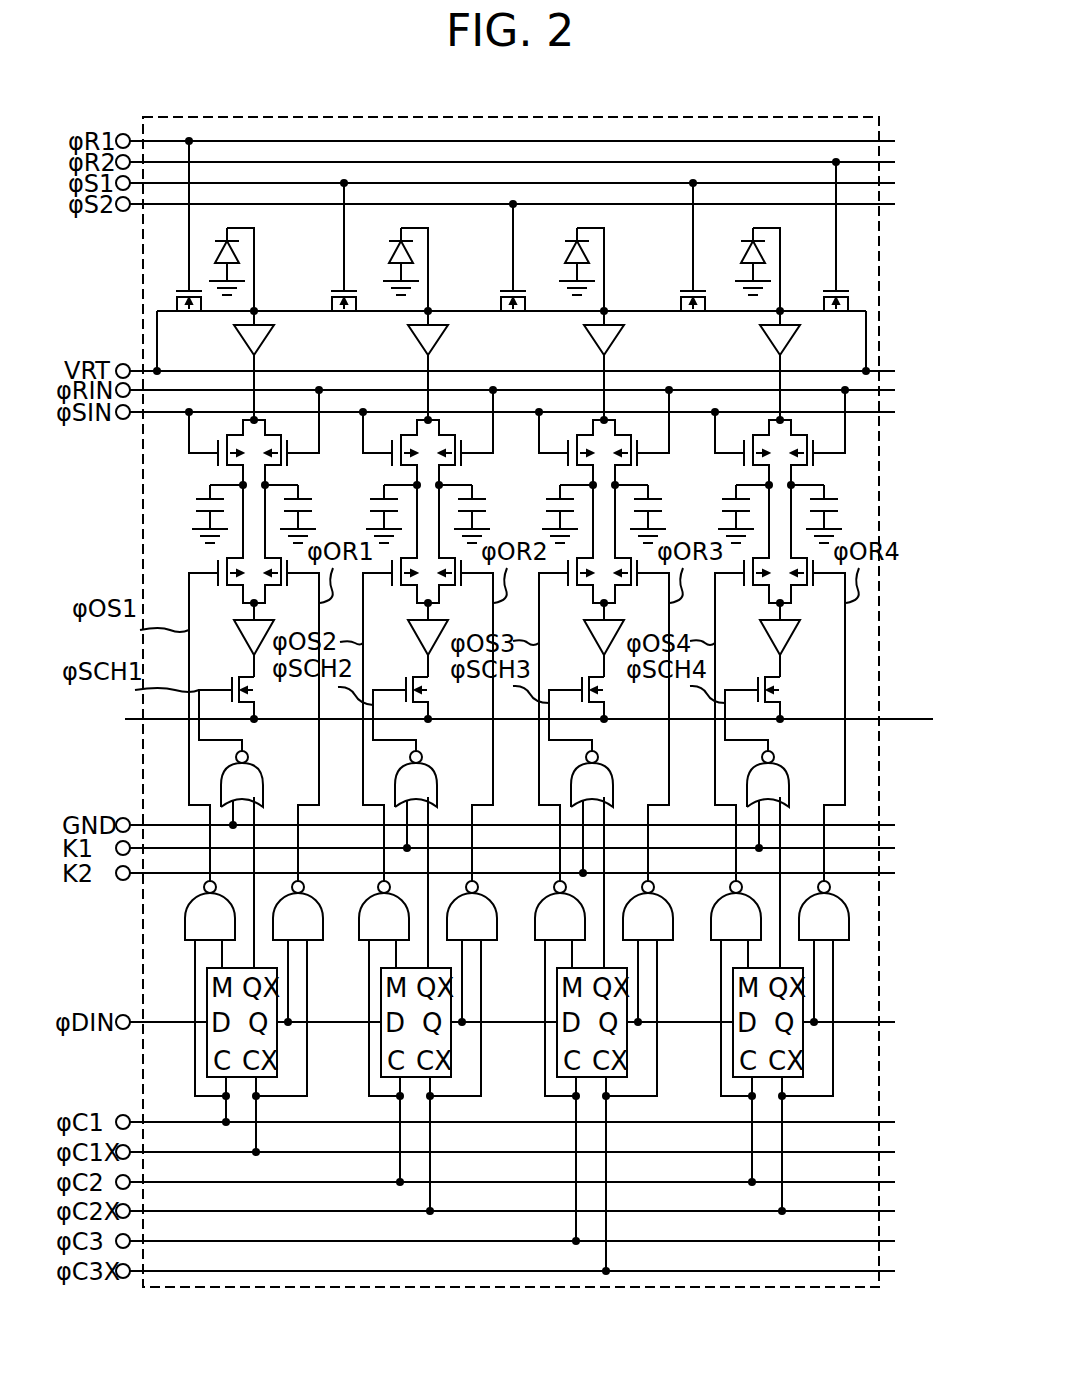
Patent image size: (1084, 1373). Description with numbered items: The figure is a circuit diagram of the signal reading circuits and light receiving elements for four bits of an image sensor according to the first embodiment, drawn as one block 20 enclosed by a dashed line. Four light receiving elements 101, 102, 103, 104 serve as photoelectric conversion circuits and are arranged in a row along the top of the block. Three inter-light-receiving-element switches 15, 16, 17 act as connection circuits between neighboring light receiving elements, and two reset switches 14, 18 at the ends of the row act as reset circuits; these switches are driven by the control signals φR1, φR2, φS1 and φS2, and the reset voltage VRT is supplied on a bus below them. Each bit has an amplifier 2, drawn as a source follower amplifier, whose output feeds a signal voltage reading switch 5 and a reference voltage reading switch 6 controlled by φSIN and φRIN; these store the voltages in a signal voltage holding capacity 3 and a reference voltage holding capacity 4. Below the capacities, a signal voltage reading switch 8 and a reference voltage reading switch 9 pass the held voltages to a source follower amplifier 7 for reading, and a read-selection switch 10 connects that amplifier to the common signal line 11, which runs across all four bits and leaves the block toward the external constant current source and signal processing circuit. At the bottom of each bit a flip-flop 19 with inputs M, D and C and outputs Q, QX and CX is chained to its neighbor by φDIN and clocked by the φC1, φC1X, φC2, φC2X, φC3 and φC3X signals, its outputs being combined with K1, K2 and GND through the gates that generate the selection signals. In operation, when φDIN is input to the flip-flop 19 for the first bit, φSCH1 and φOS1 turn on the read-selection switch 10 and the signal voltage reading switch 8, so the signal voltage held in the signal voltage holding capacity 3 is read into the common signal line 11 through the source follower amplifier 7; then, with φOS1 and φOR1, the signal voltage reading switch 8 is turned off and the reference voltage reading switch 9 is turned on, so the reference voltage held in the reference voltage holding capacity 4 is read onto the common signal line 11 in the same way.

The amplifier 2 is at (233, 338).
The signal voltage holding capacity 3 is at (198, 502).
The reference voltage holding capacity 4 is at (318, 502).
The signal voltage reading switch 5 is at (230, 438).
The reference voltage reading switch 6 is at (277, 438).
The source follower amplifier 7 is at (240, 640).
The signal voltage reading switch 8 is at (228, 558).
The reference voltage reading switch 9 is at (267, 587).
The read-selection switch 10 is at (258, 688).
The common signal line 11 is at (857, 716).
The reset switch 14 is at (177, 300).
The inter-light-receiving-element switch 15 is at (332, 300).
The inter-light-receiving-element switch 16 is at (501, 300).
The inter-light-receiving-element switch 17 is at (681, 300).
The reset switch 18 is at (824, 303).
The flip-flop 19 is at (207, 995).
The signal output circuit 20 is at (880, 300).
The light receiving element 101 is at (213, 251).
The light receiving element 102 is at (387, 251).
The light receiving element 103 is at (563, 251).
The light receiving element 104 is at (739, 251).